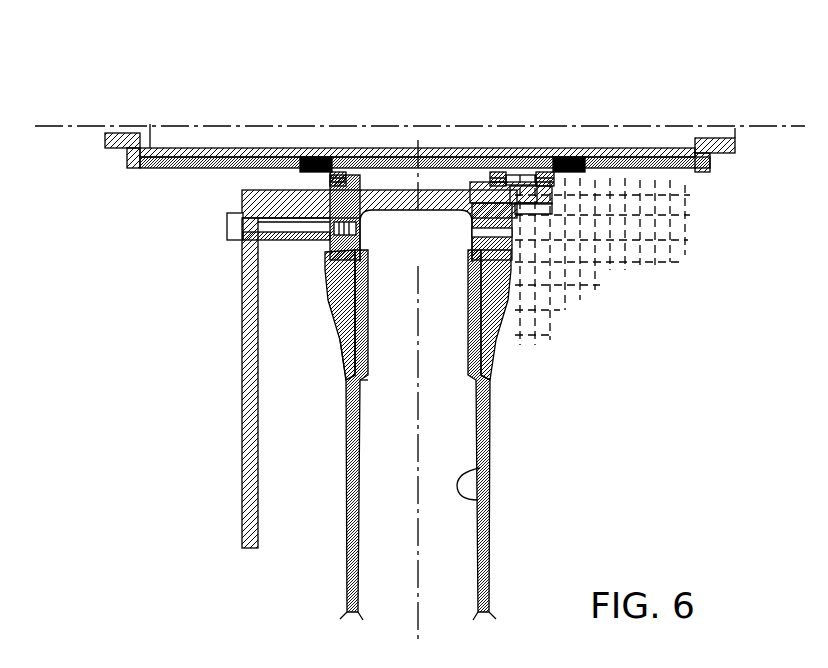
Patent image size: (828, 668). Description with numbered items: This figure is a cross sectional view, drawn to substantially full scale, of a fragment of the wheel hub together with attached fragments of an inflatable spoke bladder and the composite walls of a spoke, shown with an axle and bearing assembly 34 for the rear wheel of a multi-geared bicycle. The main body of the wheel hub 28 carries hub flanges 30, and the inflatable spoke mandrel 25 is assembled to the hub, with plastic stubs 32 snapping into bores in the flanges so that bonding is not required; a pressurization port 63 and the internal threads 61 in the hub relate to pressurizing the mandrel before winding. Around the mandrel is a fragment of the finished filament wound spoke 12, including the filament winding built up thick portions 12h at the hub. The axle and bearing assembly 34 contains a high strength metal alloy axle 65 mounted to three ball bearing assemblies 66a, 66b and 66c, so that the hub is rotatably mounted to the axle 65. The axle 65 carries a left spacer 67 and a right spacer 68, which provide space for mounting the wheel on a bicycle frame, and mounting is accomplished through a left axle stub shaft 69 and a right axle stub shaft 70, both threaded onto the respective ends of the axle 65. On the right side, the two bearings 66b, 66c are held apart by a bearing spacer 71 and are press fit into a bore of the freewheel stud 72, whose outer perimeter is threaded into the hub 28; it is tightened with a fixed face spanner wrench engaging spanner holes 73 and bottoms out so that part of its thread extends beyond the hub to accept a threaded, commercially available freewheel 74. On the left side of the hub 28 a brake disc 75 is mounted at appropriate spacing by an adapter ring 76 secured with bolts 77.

The axle and bearing assembly 34 is at (256, 123).
The axle 65 is at (434, 148).
The left spacer 67 is at (300, 148).
The ball bearing assembly 66a is at (343, 168).
The freewheel stud 72 is at (467, 182).
The ball bearing assembly 66b is at (495, 152).
The bearing spacer 71 is at (525, 157).
The ball bearing assembly 66c is at (562, 157).
The right spacer 68 is at (610, 157).
The left axle stub shaft 69 is at (125, 168).
The right axle stub shaft 70 is at (700, 172).
The adapter ring 76 is at (242, 190).
The bolts 77 is at (228, 225).
The hub body 28 is at (330, 257).
The thick portions 12h is at (340, 280).
The plastic stubs 32 is at (345, 345).
The pressurization ports 63 is at (470, 272).
The hub flanges 30 is at (366, 372).
The internal threads 61 is at (548, 208).
The spanner holes 73 is at (563, 192).
The freewheel 74 is at (567, 333).
The inflatable spoke mandrel 25 is at (480, 468).
The spoke 12 is at (492, 533).
The brake disc 75 is at (242, 503).